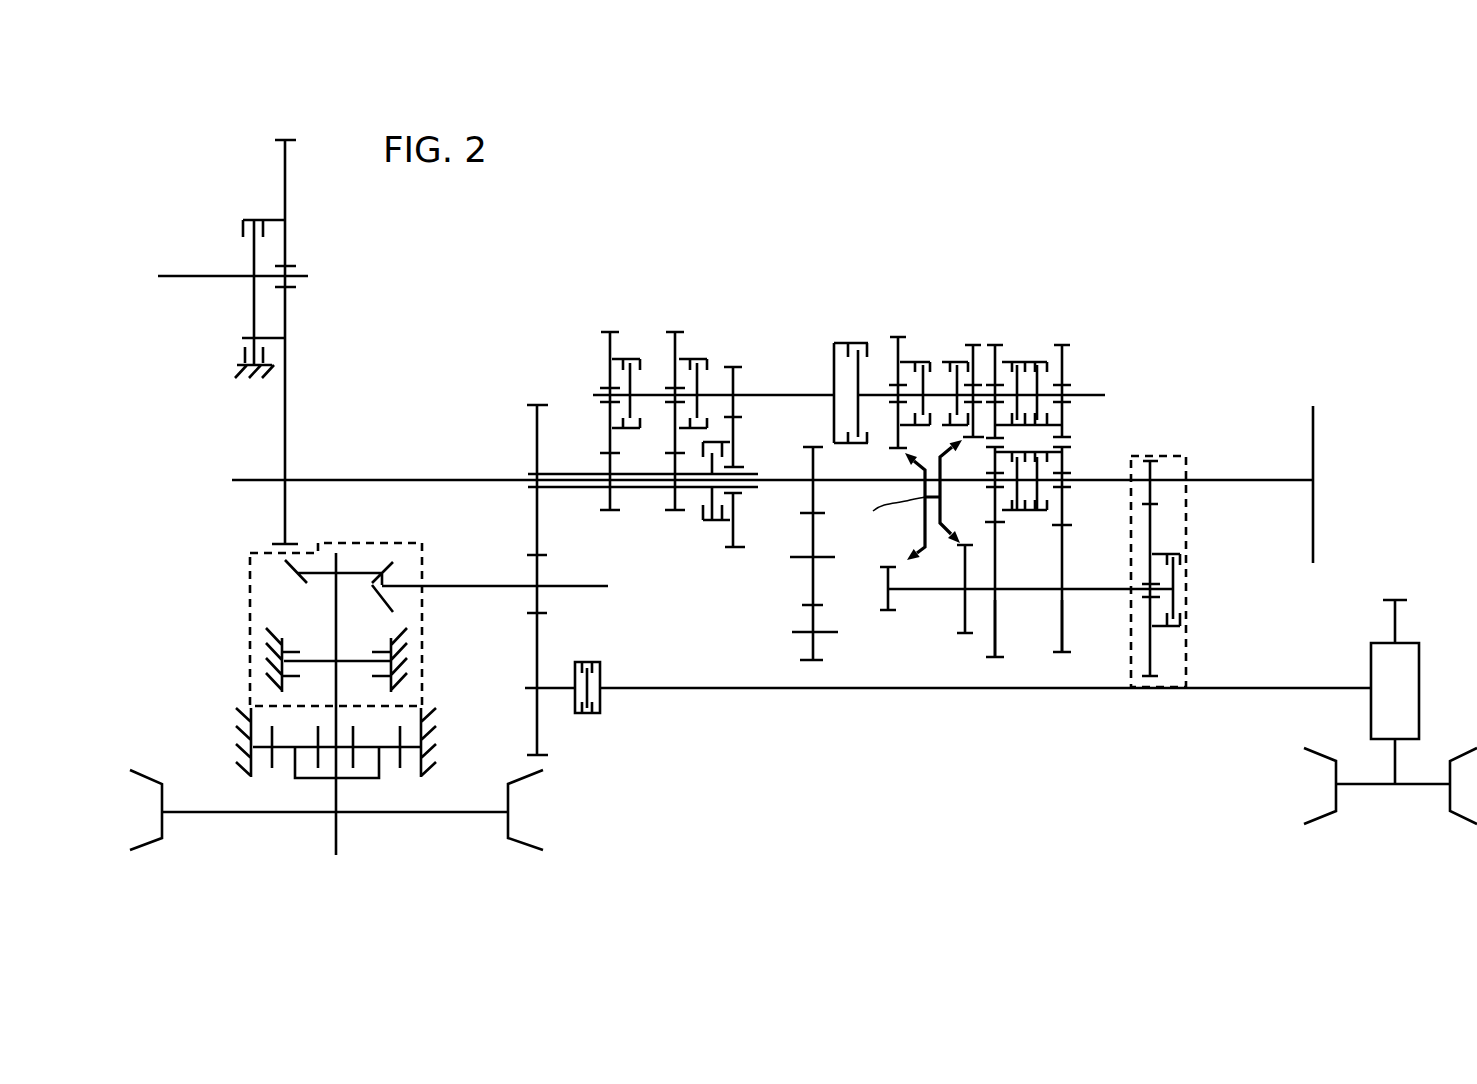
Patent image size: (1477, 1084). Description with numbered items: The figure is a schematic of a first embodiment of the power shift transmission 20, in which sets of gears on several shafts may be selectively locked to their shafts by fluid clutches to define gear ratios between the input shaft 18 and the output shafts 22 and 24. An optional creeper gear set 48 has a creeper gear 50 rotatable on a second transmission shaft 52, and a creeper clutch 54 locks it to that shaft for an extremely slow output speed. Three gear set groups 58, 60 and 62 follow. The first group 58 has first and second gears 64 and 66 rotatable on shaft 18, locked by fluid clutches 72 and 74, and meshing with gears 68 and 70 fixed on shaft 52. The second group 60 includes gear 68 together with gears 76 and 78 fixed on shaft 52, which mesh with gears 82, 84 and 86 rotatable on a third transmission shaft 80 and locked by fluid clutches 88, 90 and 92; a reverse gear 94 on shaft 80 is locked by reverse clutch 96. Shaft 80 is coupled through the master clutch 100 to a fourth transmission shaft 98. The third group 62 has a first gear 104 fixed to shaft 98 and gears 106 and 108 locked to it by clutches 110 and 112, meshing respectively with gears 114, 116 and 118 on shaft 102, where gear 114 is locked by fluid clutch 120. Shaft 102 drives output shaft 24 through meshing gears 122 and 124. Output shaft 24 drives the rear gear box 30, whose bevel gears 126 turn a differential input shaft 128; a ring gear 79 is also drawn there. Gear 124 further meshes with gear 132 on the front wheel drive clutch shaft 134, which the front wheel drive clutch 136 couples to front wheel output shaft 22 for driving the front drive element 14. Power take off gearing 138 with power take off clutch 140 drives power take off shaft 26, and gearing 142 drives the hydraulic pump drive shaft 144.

The front drive element 14 is at (1397, 785).
The input shaft 18 is at (1243, 478).
The transmission 20 is at (801, 469).
The front wheel output shaft 22 is at (820, 689).
The output shaft 24 is at (436, 588).
The power take off shaft 26 is at (206, 276).
The rear gear box 30 is at (803, 681).
The creeper gear set 48 is at (1205, 571).
The creeper gear 50 is at (1152, 650).
The second transmission shaft 52 is at (1070, 589).
The creeper clutch 54 is at (1172, 553).
The first gear set group 58 is at (1003, 614).
The second gear set group 60 is at (1047, 365).
The third gear set group 62 is at (684, 431).
The first gear 64 is at (993, 517).
The second gear 66 is at (1065, 516).
The gear 68 is at (996, 606).
The gear 70 is at (1060, 635).
The fluid clutch 72 is at (1018, 522).
The fluid clutch 74 is at (1038, 518).
The gear 76 is at (886, 588).
The gear 78 is at (956, 618).
The ring gear 79 is at (407, 812).
The third transmission shaft 80 is at (1092, 393).
The gear 82 is at (897, 340).
The gear 84 is at (988, 346).
The gear 86 is at (1025, 361).
The fluid clutch 88 is at (914, 361).
The fluid clutch 90 is at (952, 361).
The fluid clutch 92 is at (1044, 356).
The reverse gear 94 is at (1068, 368).
The reverse clutch 96 is at (1040, 368).
The fourth transmission shaft 98 is at (790, 388).
The master clutch 100 is at (848, 343).
The shaft 102 is at (586, 472).
The first gear 104 is at (738, 404).
The gear 106 is at (672, 352).
The gear 108 is at (608, 350).
The clutch 110 is at (698, 358).
The clutch 112 is at (630, 358).
The gear 114 is at (730, 537).
The gear 116 is at (672, 508).
The gear 118 is at (606, 510).
The fluid clutch 120 is at (712, 522).
The gear 122 is at (537, 455).
The gear 124 is at (537, 570).
The bevel gears 126 is at (374, 566).
The differential input shaft 128 is at (336, 590).
The gear 132 is at (544, 645).
The front wheel drive clutch shaft 134 is at (547, 690).
The front wheel drive clutch 136 is at (602, 708).
The power take off gearing 138 is at (282, 342).
The power take off clutch 140 is at (254, 220).
The gearing 142 is at (774, 557).
The hydraulic pump drive shaft 144 is at (803, 632).